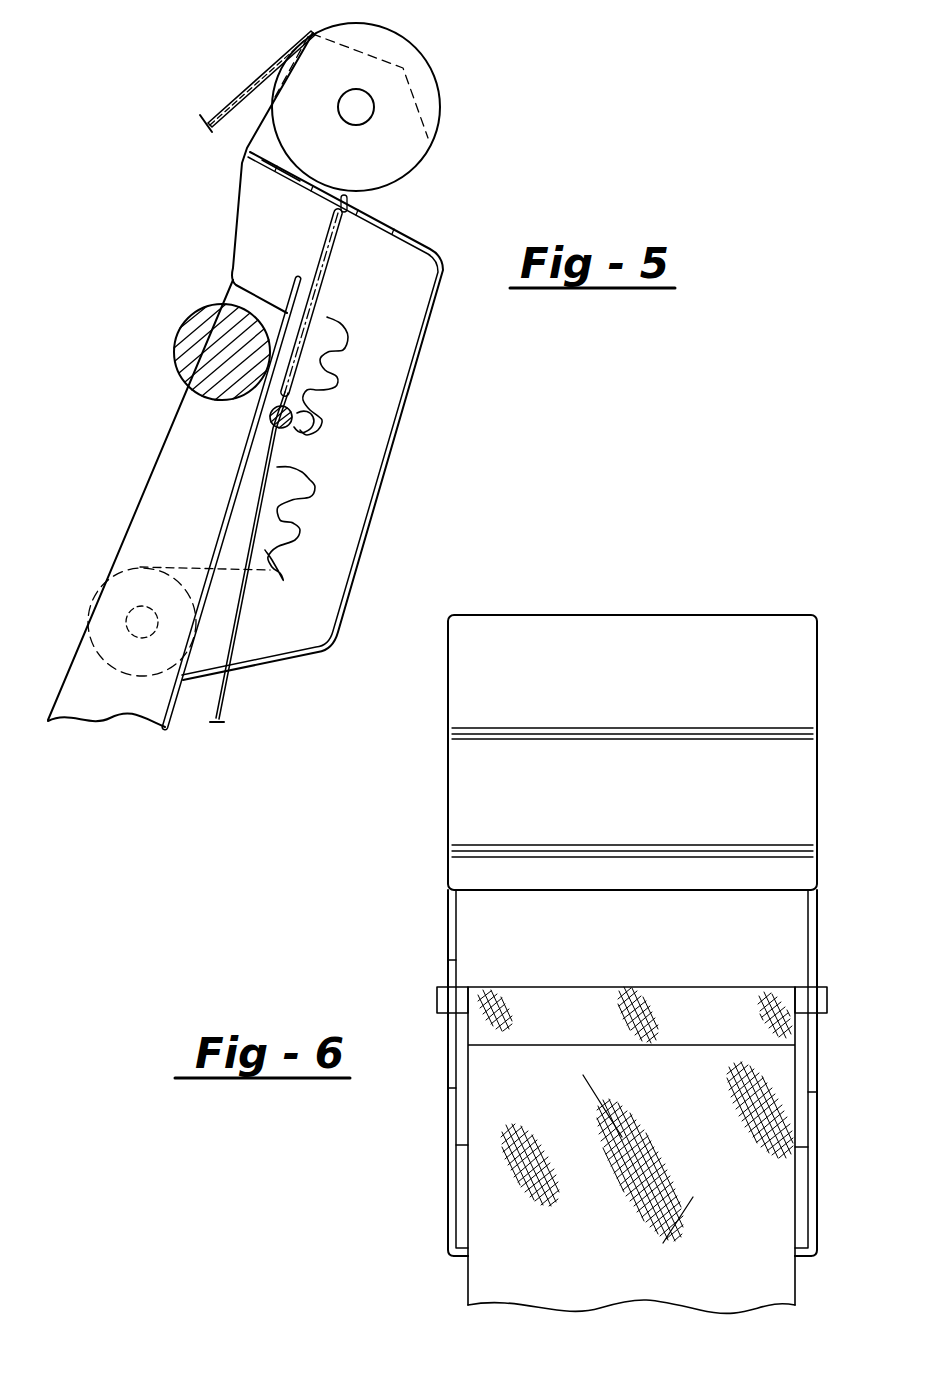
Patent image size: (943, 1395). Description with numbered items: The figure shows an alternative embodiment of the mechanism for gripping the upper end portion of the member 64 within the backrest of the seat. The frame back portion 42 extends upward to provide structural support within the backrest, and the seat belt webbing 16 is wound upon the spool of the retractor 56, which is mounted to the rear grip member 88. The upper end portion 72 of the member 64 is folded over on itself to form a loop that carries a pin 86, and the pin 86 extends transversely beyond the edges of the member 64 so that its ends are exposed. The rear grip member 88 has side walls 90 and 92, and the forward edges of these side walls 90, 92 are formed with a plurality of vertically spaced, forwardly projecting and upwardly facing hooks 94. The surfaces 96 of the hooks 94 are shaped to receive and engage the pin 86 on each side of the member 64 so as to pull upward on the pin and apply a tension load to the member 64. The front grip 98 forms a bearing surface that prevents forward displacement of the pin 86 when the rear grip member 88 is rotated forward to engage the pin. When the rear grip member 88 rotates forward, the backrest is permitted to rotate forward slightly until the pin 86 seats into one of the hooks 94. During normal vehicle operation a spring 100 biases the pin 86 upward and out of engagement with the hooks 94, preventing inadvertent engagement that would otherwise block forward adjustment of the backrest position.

In FIG. 5, the seat belt webbing 16 is at (250, 88).
In FIG. 5, the frame back portion 42 is at (113, 528).
In FIG. 5, the retractor 56 is at (422, 44).
In FIG. 6, the retractor 56 is at (448, 695).
In FIG. 5, the member 64 is at (227, 691).
In FIG. 6, the member 64 is at (468, 1278).
In FIG. 5, the upper end portion 72 is at (265, 458).
In FIG. 6, the upper end portion 72 is at (620, 986).
In FIG. 5, the pin 86 is at (268, 414).
In FIG. 6, the pin 86 is at (462, 987).
In FIG. 5, the rear grip member 88 is at (396, 437).
In FIG. 6, the rear grip member 88 is at (447, 1175).
In FIG. 6, the side wall 90 is at (447, 1122).
In FIG. 6, the side wall 92 is at (815, 1112).
In FIG. 5, the hooks 94 is at (341, 352).
In FIG. 5, the surfaces 96 is at (308, 420).
In FIG. 5, the front grip 98 is at (212, 533).
In FIG. 5, the spring 100 is at (341, 258).